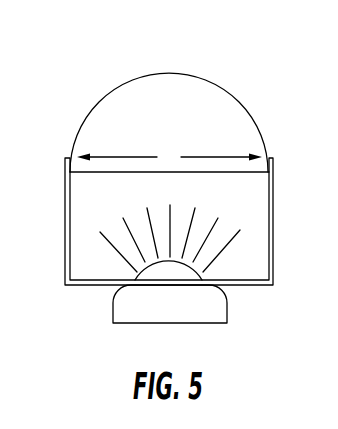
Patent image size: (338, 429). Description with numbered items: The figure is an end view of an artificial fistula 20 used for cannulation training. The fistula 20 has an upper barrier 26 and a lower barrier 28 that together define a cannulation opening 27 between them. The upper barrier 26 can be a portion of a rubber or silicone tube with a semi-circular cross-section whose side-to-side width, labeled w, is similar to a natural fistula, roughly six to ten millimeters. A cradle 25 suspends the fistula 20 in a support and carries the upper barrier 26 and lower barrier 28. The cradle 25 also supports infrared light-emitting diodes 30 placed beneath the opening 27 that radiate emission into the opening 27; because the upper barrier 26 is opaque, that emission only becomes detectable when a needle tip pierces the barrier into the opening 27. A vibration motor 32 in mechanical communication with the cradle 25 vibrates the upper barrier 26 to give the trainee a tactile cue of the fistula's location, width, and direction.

The artificial fistula 20 is at (172, 192).
The cradle 25 is at (273, 268).
The upper barrier 26 is at (98, 102).
The cannulation opening 27 is at (173, 132).
The lower barrier 28 is at (217, 173).
The IR-light emitting diodes 30 is at (120, 263).
The vibration motor 32 is at (225, 313).